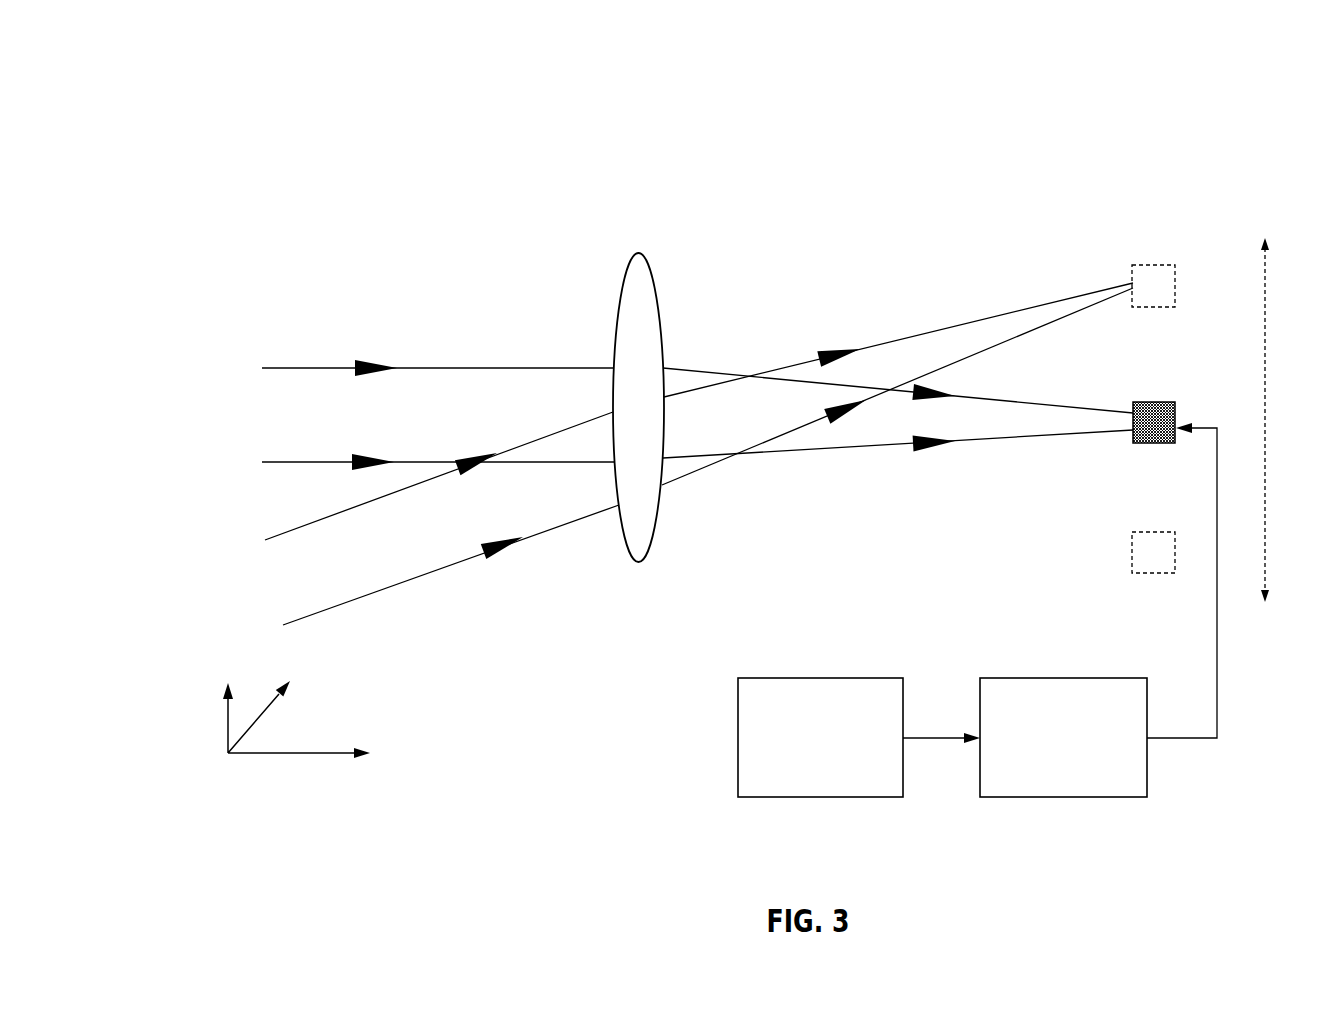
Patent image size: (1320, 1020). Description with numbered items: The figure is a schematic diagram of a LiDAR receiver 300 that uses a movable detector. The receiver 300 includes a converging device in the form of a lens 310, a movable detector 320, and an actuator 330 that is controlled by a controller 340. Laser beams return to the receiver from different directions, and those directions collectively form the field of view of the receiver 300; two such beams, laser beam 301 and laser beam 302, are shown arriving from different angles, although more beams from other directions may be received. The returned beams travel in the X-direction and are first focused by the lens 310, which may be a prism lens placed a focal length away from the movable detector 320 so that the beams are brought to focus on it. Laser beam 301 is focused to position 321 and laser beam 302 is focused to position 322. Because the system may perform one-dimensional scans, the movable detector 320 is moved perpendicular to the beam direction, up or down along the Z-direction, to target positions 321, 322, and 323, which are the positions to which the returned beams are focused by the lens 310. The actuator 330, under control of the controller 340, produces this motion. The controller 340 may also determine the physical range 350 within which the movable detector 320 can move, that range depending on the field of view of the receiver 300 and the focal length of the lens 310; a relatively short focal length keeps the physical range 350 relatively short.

The LiDAR receiver 300 is at (813, 41).
The laser beam 301 is at (280, 623).
The laser beam 302 is at (234, 362).
The lens 310 is at (638, 383).
The movable detector 320 is at (1159, 439).
The position 321 is at (1153, 304).
The position 322 is at (1154, 443).
The position 323 is at (1153, 573).
The actuator 330 is at (1060, 610).
The controller 340 is at (820, 737).
The physical range 350 is at (1288, 420).